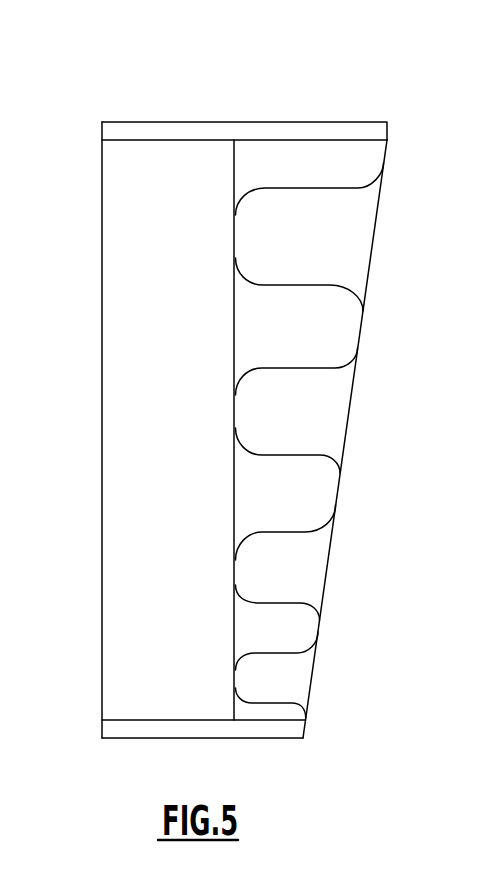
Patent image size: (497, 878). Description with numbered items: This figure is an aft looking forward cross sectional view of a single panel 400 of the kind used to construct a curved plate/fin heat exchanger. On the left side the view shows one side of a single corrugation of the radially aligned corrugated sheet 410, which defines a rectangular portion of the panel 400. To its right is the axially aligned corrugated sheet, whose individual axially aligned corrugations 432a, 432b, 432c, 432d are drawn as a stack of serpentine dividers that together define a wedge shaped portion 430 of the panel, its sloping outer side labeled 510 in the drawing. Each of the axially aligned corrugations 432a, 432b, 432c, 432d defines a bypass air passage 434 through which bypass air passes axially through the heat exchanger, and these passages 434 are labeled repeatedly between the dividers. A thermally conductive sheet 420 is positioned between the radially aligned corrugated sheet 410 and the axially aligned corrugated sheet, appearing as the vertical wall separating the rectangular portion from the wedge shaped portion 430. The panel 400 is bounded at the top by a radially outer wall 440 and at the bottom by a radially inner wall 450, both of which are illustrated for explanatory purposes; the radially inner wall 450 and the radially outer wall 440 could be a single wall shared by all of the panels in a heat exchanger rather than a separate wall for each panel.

The panel 400 is at (133, 60).
The radially aligned corrugated sheet 410 is at (112, 208).
The thermally conductive sheet 420 is at (233, 172).
The wedge shaped portion 430 is at (357, 239).
The axially aligned corrugation 432a is at (297, 653).
The axially aligned corrugation 432b is at (307, 532).
The axially aligned corrugation 432c is at (316, 369).
The axially aligned corrugation 432d is at (327, 188).
The bypass air passage 434 is at (322, 175).
The radially outer wall 440 is at (303, 122).
The radially inner wall 450 is at (267, 739).
The slanted wall 510 is at (400, 421).